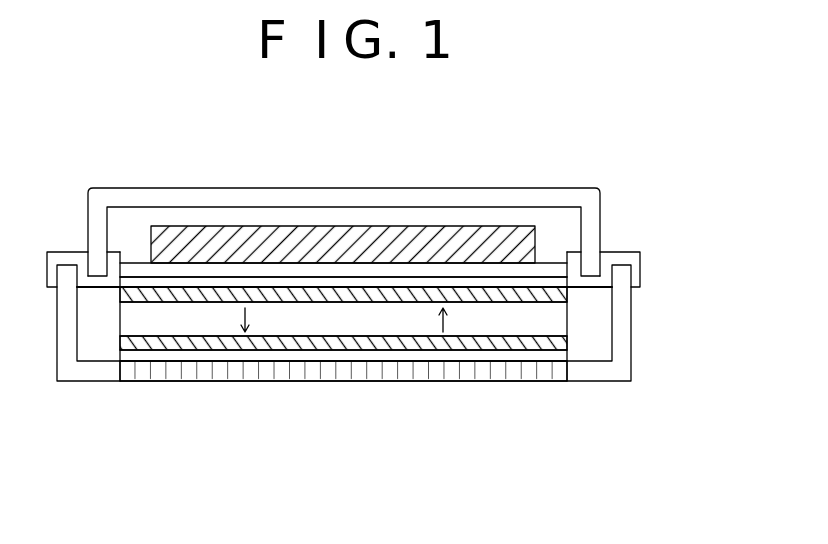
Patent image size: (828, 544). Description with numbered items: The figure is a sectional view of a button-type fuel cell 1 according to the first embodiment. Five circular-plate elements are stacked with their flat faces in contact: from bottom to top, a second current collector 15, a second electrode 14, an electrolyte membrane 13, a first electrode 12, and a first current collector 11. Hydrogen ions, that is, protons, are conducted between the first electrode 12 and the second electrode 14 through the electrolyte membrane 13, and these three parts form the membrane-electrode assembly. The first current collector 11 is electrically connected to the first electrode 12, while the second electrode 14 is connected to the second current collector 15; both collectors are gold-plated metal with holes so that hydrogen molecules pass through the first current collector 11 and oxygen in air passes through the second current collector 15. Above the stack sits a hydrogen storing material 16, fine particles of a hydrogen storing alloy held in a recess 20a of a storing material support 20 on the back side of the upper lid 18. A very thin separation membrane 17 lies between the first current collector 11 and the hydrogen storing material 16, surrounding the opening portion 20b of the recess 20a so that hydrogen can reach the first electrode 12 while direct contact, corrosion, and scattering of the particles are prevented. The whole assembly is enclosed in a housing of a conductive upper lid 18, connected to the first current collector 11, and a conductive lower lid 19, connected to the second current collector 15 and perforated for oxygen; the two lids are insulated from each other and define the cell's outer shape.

The fuel cell 1 is at (590, 165).
The first current collector 11 is at (382, 282).
The first electrode 12 is at (445, 292).
The electrolyte membrane 13 is at (375, 323).
The second electrode 14 is at (515, 343).
The second current collector 15 is at (450, 355).
The hydrogen storing material 16 is at (265, 232).
The separation membrane 17 is at (325, 268).
The upper lid 18 is at (200, 197).
The lower lid 19 is at (313, 372).
The storing material support 20 is at (562, 215).
The recess 20a is at (532, 238).
The opening portion 20b is at (537, 262).